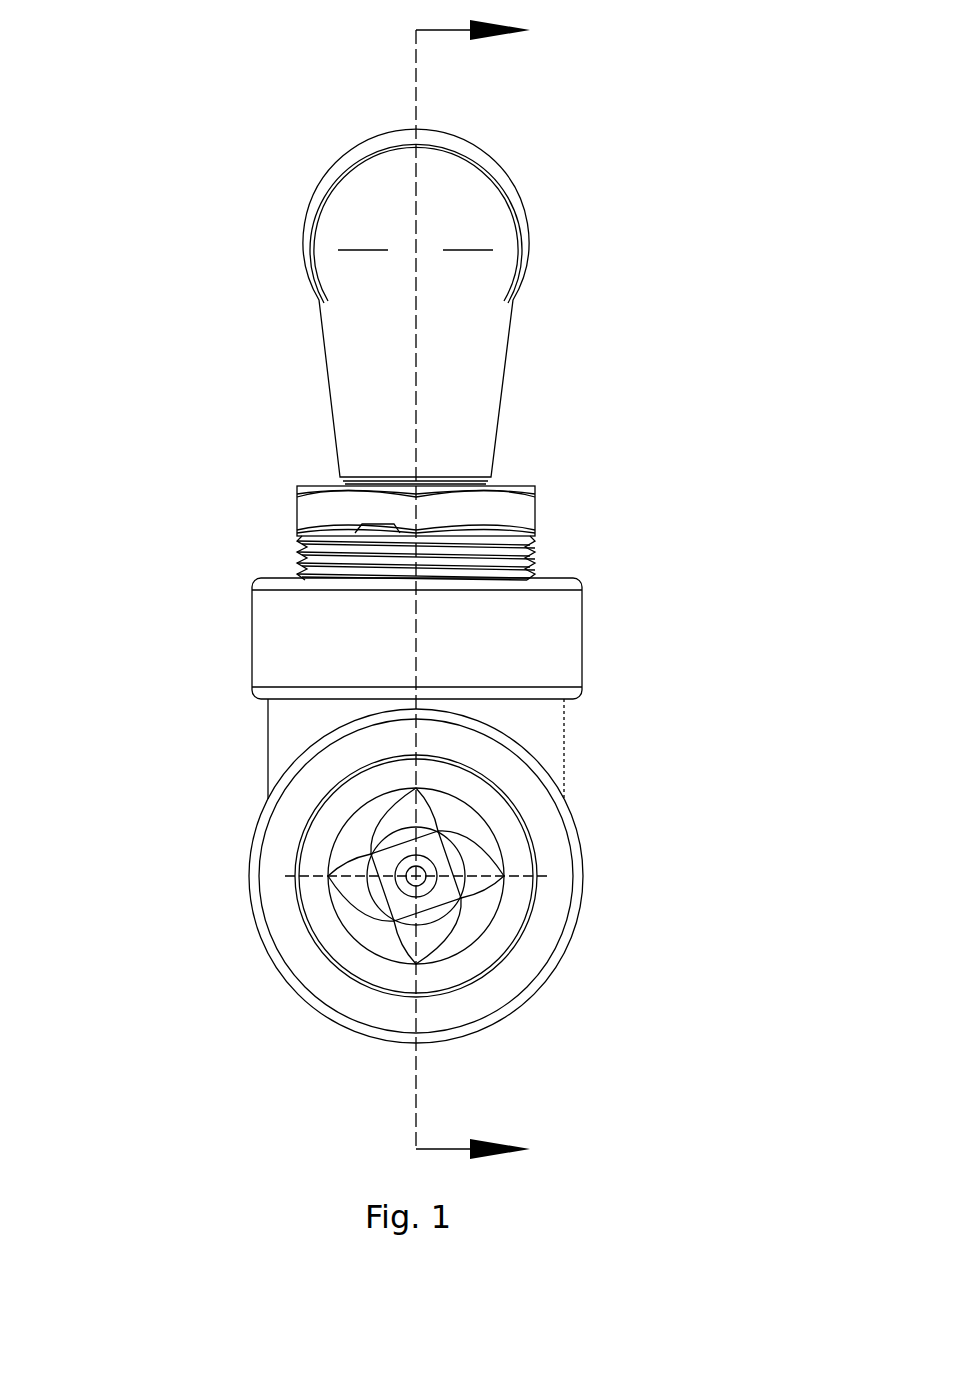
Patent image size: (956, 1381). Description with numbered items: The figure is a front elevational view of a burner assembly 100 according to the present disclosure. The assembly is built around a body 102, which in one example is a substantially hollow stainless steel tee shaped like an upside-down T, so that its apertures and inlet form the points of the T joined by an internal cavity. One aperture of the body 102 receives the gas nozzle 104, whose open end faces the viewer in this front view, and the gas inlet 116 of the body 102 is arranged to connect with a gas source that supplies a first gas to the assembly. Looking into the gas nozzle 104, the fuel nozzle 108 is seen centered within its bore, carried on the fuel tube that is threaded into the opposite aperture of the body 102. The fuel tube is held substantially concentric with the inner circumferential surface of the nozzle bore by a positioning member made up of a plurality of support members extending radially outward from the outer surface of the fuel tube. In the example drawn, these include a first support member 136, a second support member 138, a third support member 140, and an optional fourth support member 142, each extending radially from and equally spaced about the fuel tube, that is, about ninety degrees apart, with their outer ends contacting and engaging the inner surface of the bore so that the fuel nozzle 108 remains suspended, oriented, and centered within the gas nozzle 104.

The burner assembly 100 is at (636, 225).
The body 102 is at (582, 681).
The gas nozzle 104 is at (545, 772).
The fuel nozzle 108 is at (402, 885).
The gas inlet 116 is at (562, 563).
The first support member 136 is at (408, 817).
The second support member 138 is at (487, 877).
The third support member 140 is at (422, 945).
The fourth support member 142 is at (350, 870).